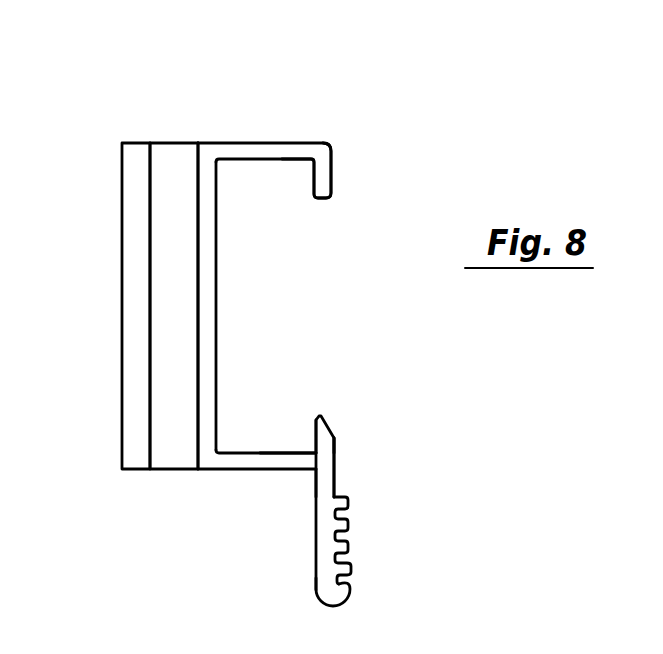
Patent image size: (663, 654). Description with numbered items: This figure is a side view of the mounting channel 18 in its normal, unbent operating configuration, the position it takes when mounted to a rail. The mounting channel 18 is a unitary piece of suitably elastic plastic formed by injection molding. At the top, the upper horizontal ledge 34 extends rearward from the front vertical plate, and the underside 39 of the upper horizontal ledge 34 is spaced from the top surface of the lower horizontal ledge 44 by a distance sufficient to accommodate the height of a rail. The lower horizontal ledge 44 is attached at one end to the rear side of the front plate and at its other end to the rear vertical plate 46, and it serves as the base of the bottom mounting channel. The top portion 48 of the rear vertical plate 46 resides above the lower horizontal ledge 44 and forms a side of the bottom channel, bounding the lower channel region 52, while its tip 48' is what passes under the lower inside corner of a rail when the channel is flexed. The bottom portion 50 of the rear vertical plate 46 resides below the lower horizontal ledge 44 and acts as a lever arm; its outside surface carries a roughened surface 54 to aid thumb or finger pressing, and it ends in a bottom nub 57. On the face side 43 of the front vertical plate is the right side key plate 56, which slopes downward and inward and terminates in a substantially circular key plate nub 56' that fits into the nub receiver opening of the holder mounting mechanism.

The mounting channel 18 is at (213, 118).
The upper horizontal ledge 34 is at (277, 143).
The underside of the upper horizontal ledge 39 is at (282, 160).
The face side of the vertical plate 43 is at (208, 284).
The lower horizontal ledge 44 is at (263, 453).
The lower channel region 52 is at (289, 436).
The tip of the top portion 48' is at (352, 386).
The top portion of the rear vertical plate 48 is at (343, 487).
The rear vertical plate 46 is at (340, 465).
The bottom portion of the rear vertical plate 50 is at (342, 490).
The roughened surface 54 is at (342, 562).
The bottom nub 57 is at (342, 603).
The key plate nub 56' is at (101, 342).
The right side key plate 56 is at (179, 355).